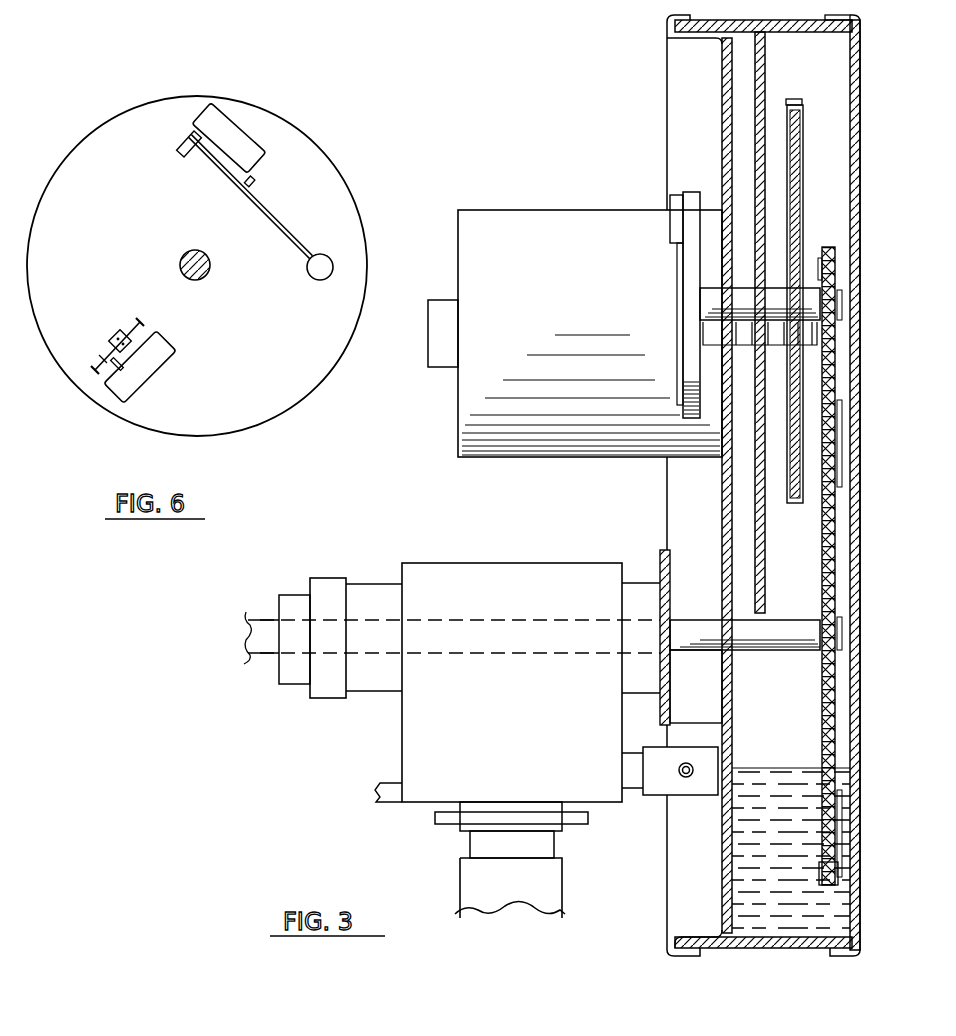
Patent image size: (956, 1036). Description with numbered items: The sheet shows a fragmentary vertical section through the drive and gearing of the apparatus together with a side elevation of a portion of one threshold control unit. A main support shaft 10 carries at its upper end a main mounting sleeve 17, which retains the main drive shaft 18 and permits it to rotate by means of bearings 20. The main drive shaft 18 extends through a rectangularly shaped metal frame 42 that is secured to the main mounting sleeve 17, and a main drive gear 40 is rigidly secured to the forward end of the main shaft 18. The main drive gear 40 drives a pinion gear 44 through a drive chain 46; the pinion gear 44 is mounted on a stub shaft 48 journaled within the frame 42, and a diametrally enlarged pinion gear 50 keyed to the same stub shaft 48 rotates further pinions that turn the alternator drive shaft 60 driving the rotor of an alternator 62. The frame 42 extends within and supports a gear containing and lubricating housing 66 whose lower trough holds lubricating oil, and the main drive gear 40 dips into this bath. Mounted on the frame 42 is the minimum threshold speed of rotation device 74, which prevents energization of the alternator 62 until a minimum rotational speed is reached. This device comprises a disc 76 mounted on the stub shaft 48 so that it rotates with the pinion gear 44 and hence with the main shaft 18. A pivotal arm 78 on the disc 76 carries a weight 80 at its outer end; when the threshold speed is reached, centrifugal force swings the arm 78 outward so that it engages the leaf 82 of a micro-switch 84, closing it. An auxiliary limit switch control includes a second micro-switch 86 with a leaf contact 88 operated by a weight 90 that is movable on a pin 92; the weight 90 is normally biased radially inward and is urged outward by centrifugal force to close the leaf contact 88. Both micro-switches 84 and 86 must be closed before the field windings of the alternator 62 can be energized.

In FIG. 3, the main support shaft 10 is at (480, 892).
In FIG. 3, the main mounting sleeve 17 is at (442, 573).
In FIG. 3, the main drive shaft 18 is at (250, 662).
In FIG. 3, the bearings 20 is at (326, 578).
In FIG. 3, the main drive gear 40 is at (840, 868).
In FIG. 3, the frame 42 is at (858, 745).
In FIG. 3, the pinion gear 44 is at (836, 268).
In FIG. 3, the drive chain 46 is at (824, 542).
In FIG. 6, the stub shaft 48 is at (205, 276).
In FIG. 3, the stub shaft 48 is at (700, 305).
In FIG. 3, the diametrally enlarged pinion gear 50 is at (798, 150).
In FIG. 3, the alternator drive shaft 60 is at (746, 342).
In FIG. 3, the alternator 62 is at (572, 218).
In FIG. 3, the gear containing and lubricating housing 66 is at (726, 888).
In FIG. 6, the minimum threshold speed of rotation device 74 is at (308, 112).
In FIG. 3, the minimum threshold speed of rotation device 74 is at (668, 248).
In FIG. 6, the disc 76 is at (290, 376).
In FIG. 6, the pivotal arm 78 is at (272, 224).
In FIG. 6, the weight 80 is at (318, 276).
In FIG. 6, the leaf 82 is at (254, 182).
In FIG. 6, the micro-switch 84 is at (222, 105).
In FIG. 6, the micro-switch 86 is at (140, 376).
In FIG. 6, the leaf contact 88 is at (118, 368).
In FIG. 6, the weight 90 is at (116, 330).
In FIG. 6, the pin 92 is at (100, 358).